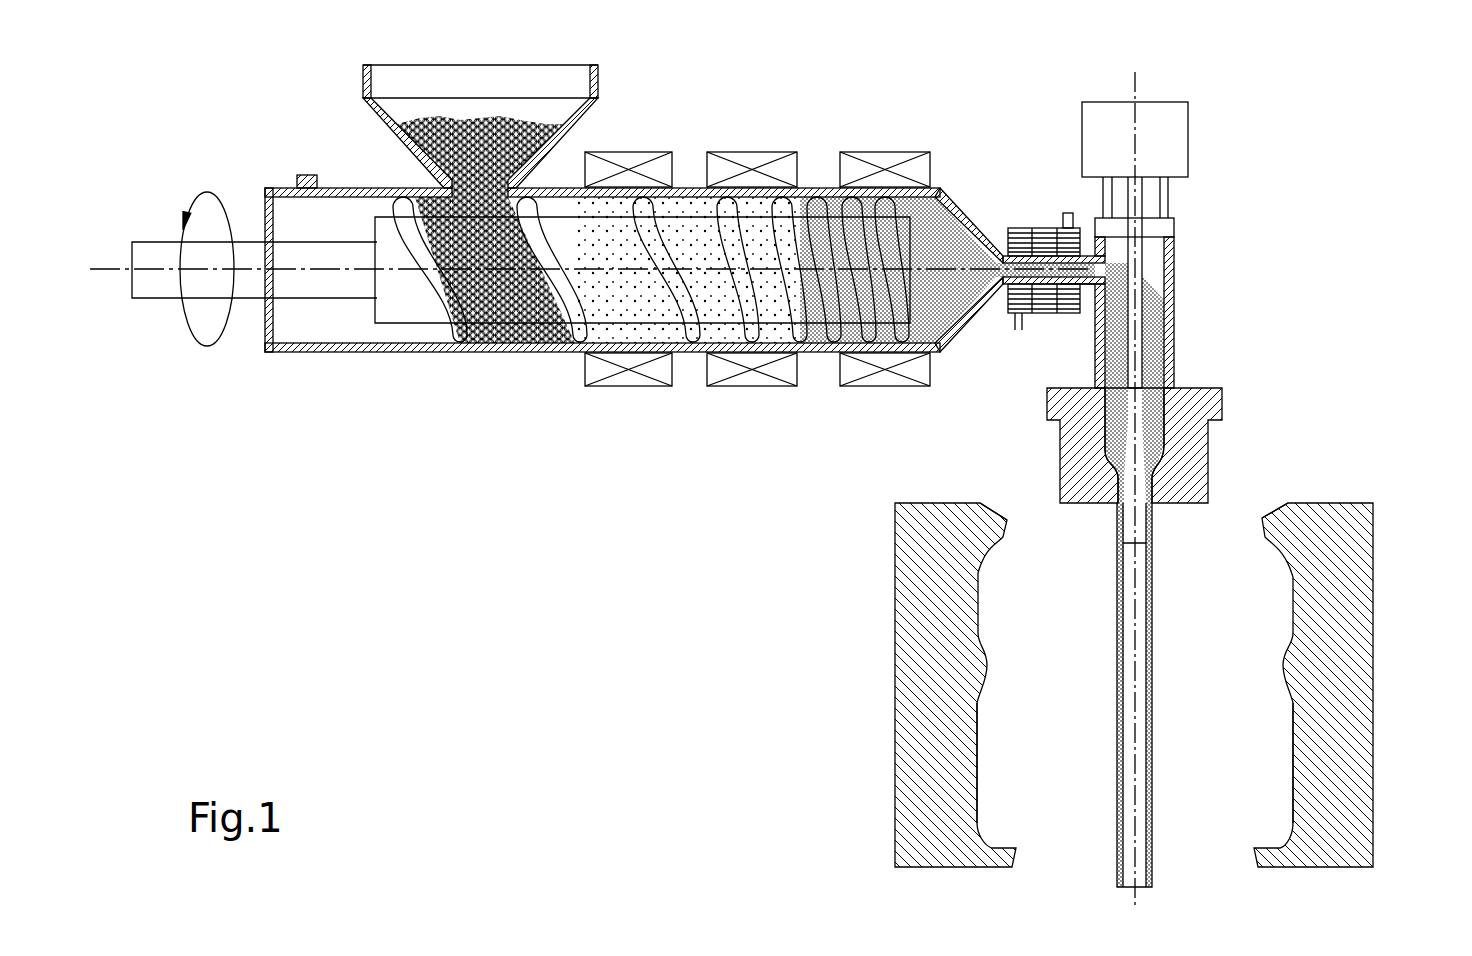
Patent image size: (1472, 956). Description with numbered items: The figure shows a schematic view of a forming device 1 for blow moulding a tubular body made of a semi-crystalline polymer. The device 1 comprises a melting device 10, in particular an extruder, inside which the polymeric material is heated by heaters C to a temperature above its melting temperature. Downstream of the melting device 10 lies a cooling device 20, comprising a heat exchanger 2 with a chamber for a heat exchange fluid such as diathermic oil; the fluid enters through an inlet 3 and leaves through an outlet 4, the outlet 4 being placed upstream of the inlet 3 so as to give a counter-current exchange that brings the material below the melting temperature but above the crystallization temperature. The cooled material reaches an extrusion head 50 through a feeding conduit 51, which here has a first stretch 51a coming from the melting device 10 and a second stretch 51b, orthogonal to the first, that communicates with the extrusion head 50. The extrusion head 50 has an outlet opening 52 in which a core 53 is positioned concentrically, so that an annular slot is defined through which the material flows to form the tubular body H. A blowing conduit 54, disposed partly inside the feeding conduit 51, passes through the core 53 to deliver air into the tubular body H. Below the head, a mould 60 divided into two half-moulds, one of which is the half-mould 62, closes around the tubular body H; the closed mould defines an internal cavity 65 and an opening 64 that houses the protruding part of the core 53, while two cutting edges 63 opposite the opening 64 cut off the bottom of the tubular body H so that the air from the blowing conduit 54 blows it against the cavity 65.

The forming device 1 is at (602, 552).
The melting device 10 is at (493, 353).
The cooling device 20 is at (1010, 223).
The heat exchanger 2 is at (1042, 228).
The inlet 3 is at (1069, 213).
The outlet 4 is at (1020, 331).
The heaters C is at (645, 152).
The feeding conduit 51 is at (1083, 247).
The first stretch 51a is at (1062, 287).
The second stretch 51b is at (1174, 300).
The blowing conduit 54 is at (1137, 273).
The extrusion head 50 is at (1213, 390).
The core 53 is at (1142, 445).
The outlet opening 52 is at (1113, 507).
The tubular body H is at (1152, 697).
The mould 60 is at (1367, 477).
The half-mould 62 is at (895, 640).
The cutting edges 63 is at (1373, 563).
The opening 64 is at (1012, 518).
The internal cavity 65 is at (978, 737).